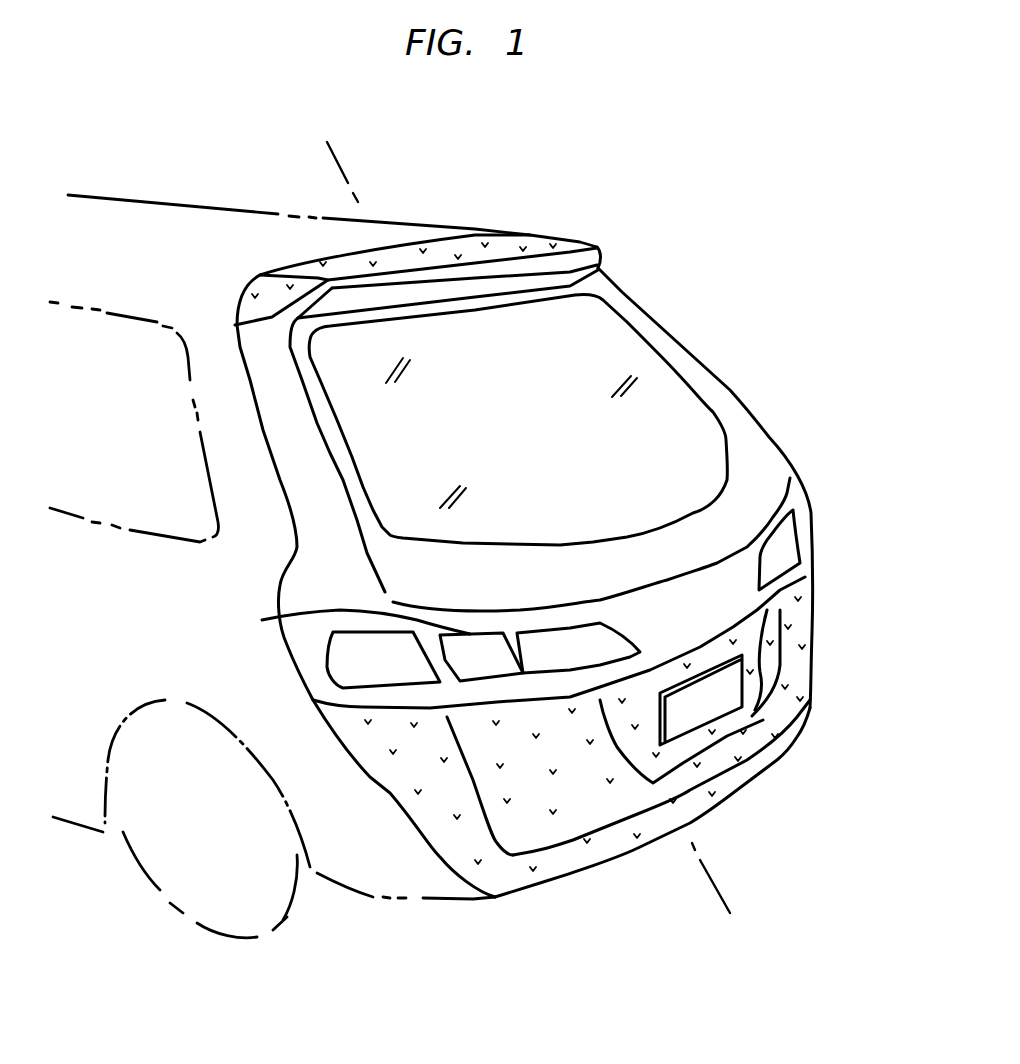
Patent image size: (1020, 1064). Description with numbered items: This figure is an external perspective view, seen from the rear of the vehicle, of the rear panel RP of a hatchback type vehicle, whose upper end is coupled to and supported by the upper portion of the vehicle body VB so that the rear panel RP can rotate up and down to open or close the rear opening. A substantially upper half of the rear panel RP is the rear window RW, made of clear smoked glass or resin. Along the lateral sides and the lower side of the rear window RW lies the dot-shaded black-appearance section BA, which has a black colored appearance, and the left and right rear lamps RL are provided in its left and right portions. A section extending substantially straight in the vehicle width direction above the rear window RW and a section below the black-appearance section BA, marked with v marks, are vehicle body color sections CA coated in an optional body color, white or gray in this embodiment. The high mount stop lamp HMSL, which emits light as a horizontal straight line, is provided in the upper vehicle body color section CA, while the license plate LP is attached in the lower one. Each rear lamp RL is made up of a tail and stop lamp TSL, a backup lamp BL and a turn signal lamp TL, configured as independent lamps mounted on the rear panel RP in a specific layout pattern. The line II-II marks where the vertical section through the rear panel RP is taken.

The vehicle body VB is at (190, 204).
The line II- II is at (806, 900).
The rear panel RP is at (687, 176).
The high mount stop lamp HMSL is at (590, 247).
The black-appearance section BA is at (730, 413).
The rear window RW is at (541, 429).
The vehicle body color section CA is at (504, 249).
The backup lamp BL is at (265, 620).
The turn signal lamp TL is at (347, 668).
The tail and stop lamp TSL is at (563, 650).
The license plate LP is at (707, 717).
The rear lamp RL is at (423, 743).